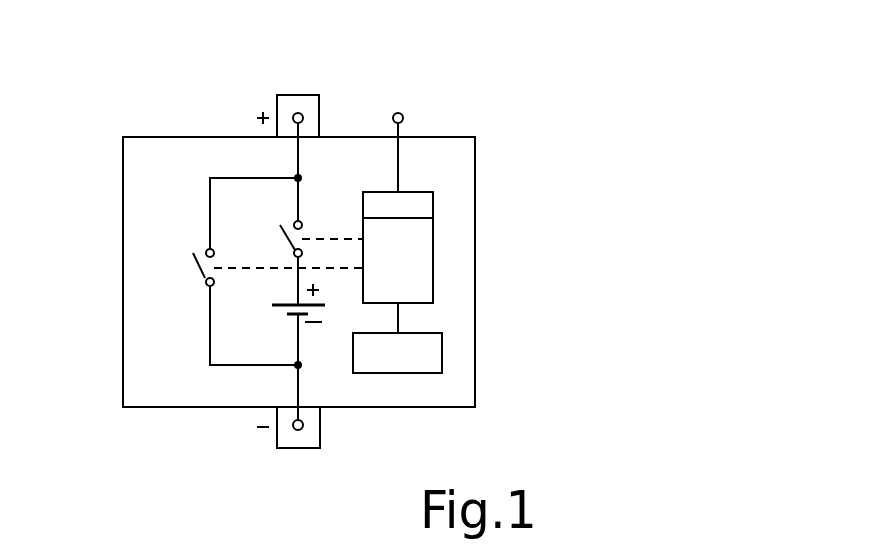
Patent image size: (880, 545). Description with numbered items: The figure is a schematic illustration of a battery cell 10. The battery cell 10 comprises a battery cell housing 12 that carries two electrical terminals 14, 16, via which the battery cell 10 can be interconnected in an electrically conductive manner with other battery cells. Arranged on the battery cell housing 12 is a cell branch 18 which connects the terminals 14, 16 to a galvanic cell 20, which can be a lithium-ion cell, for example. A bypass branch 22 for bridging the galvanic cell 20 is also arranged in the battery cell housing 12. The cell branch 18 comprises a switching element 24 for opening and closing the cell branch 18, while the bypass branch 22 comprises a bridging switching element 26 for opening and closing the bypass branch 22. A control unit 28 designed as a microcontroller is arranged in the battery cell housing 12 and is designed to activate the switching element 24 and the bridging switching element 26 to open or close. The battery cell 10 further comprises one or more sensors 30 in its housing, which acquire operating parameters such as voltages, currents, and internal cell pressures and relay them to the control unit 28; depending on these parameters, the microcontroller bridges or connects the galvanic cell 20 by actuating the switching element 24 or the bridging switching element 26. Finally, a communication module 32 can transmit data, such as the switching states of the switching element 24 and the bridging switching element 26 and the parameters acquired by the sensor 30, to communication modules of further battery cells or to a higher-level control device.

The battery cell 10 is at (503, 105).
The battery cell housing 12 is at (475, 300).
The electrical terminal 14 is at (299, 95).
The electrical terminal 16 is at (320, 425).
The cell branch 18 is at (269, 281).
The galvanic cell 20 is at (276, 326).
The bypass branch 22 is at (189, 229).
The switching element 24 is at (259, 228).
The bridging switching element 26 is at (186, 282).
The control unit 28 is at (433, 252).
The sensor 30 is at (442, 353).
The communication module 32 is at (433, 203).